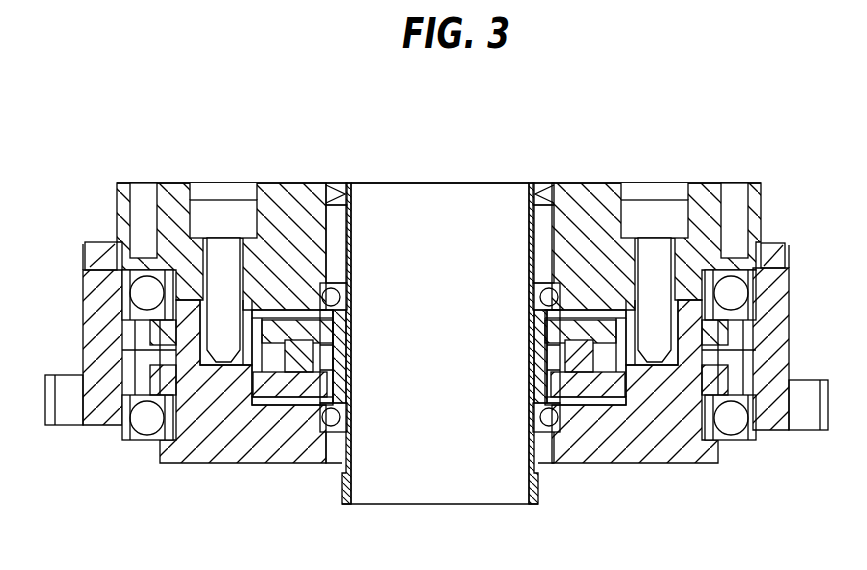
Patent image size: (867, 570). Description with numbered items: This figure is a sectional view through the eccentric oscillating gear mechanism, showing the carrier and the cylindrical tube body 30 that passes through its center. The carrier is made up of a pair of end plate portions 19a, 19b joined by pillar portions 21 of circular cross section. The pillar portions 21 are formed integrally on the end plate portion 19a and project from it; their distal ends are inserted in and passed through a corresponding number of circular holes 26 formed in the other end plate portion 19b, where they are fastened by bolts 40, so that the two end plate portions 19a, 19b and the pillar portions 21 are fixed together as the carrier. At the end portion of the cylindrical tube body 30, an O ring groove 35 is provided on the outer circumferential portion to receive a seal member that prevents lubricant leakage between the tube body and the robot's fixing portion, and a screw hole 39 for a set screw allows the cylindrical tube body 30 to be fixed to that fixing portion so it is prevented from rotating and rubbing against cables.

The end plate portion 19a is at (203, 456).
The other end plate portion 19b is at (288, 188).
The pillar portion 21 is at (246, 362).
The circular hole 26 is at (138, 286).
The cylindrical tube body 30 is at (352, 222).
The O ring groove 35 is at (538, 481).
The screw hole 39 is at (342, 492).
The bolt 40 is at (225, 186).